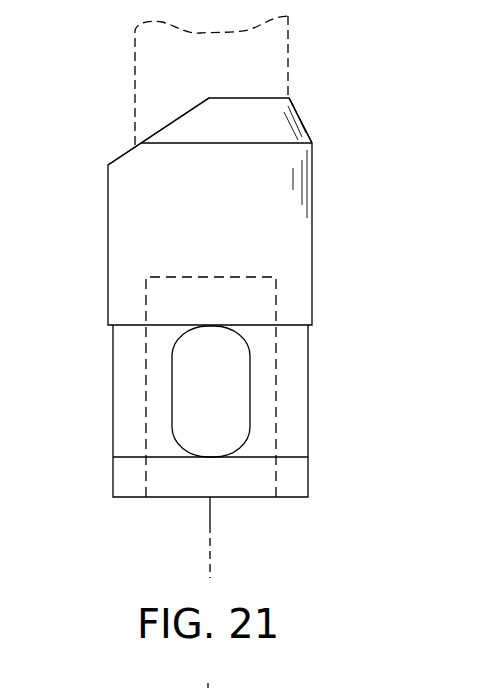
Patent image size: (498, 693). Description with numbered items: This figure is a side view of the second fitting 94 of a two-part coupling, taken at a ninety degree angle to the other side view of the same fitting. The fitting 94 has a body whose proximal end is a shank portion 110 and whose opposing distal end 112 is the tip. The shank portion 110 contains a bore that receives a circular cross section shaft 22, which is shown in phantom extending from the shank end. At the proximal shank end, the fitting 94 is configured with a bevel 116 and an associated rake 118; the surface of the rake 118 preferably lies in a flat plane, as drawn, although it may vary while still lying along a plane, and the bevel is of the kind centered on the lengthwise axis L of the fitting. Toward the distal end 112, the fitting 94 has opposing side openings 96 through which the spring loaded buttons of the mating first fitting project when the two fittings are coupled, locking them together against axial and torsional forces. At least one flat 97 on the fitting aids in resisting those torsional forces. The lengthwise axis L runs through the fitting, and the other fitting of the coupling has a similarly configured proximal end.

The shaft 22 is at (279, 43).
The second fitting 94 is at (214, 317).
The side opening 96 is at (250, 402).
The flat 97 is at (277, 476).
The shank portion 110 is at (104, 172).
The distal end 112 is at (113, 402).
The bevel 116 is at (303, 122).
The rake 118 is at (158, 134).
The lengthwise axis L is at (210, 568).